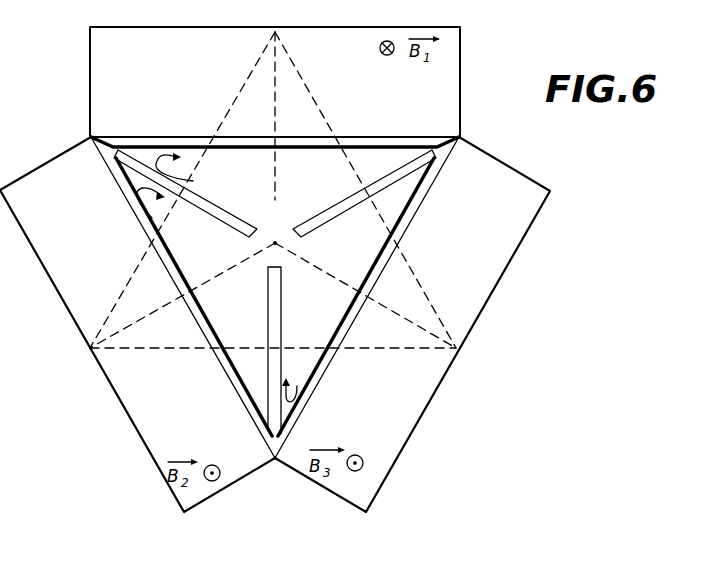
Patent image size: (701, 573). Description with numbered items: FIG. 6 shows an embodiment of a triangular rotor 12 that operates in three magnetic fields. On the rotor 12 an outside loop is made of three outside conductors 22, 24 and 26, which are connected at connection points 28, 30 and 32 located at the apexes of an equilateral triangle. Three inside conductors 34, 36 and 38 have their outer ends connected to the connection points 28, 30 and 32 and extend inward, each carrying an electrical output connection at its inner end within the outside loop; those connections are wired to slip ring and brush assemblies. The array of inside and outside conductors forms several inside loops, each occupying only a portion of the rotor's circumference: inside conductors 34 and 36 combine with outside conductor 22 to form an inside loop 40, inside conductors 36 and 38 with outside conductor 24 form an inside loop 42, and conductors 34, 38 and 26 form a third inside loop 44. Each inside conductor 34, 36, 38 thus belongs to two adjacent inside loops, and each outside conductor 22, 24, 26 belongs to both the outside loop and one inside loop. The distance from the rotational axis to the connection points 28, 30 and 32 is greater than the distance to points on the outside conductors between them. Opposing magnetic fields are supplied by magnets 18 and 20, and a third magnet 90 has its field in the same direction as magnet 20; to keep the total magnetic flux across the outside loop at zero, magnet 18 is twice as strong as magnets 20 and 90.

The rotor 12 is at (285, 415).
The magnet 18 is at (396, 104).
The magnet 20 is at (186, 424).
The outside conductor 22 is at (147, 230).
The outside conductor 24 is at (193, 145).
The outside conductor 26 is at (405, 222).
The connection point 28 is at (275, 460).
The connection point 30 is at (91, 137).
The connection point 32 is at (459, 137).
The inside conductor 34 is at (282, 296).
The inside conductor 36 is at (230, 212).
The inside conductor 38 is at (334, 208).
The inside loop 40 is at (165, 210).
The inside loop 42 is at (187, 168).
The inside loop 44 is at (296, 374).
The third magnet 90 is at (390, 425).